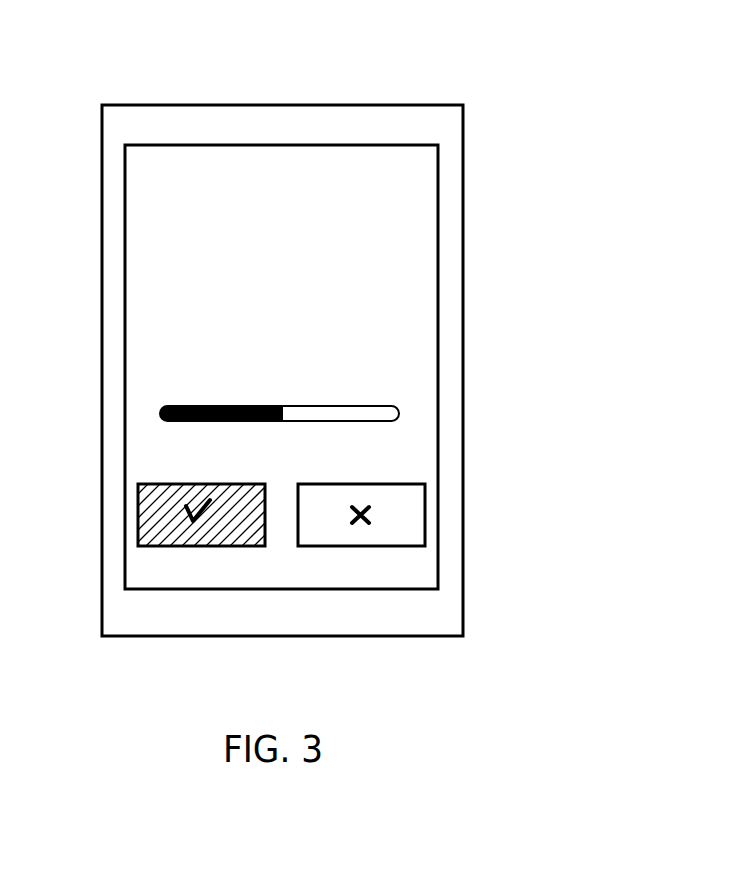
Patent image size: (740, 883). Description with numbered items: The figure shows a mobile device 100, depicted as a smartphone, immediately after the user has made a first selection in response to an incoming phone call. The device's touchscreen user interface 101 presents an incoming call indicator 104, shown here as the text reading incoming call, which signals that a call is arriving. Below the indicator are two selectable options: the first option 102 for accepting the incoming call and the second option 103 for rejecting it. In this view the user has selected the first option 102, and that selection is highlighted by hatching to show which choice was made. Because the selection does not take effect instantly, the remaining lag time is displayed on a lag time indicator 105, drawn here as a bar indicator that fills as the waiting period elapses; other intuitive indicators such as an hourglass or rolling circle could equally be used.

The mobile device 100 is at (344, 105).
The user interface 101 is at (418, 190).
The first option 102 is at (138, 485).
The second option 103 is at (402, 502).
The incoming call indicator 104 is at (377, 302).
The lag time indicator 105 is at (172, 406).